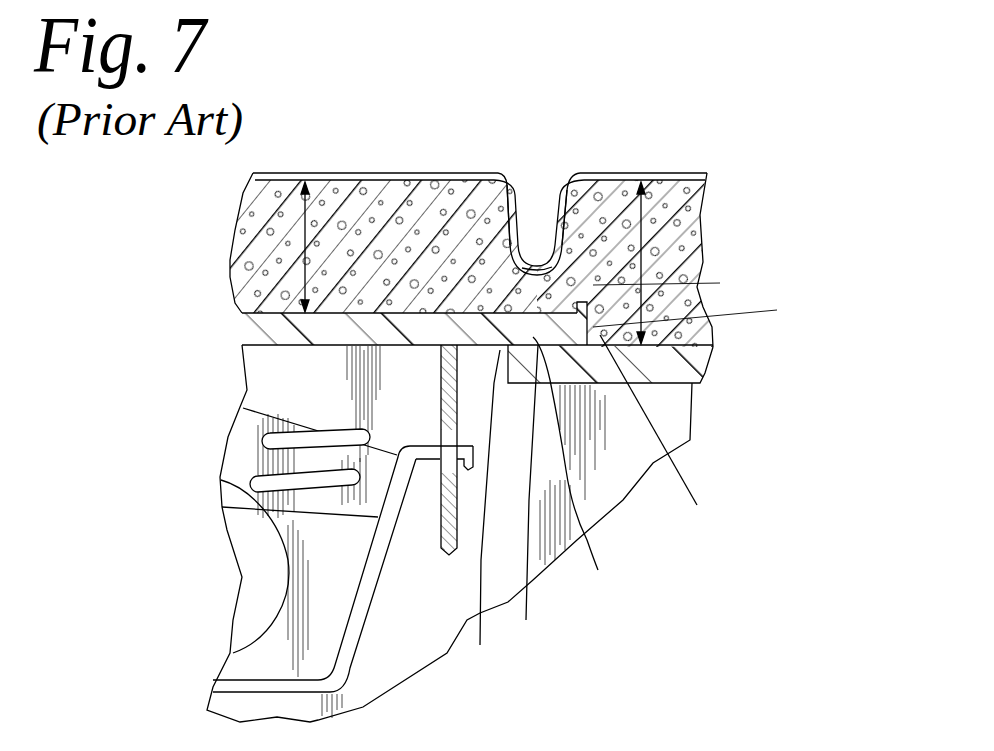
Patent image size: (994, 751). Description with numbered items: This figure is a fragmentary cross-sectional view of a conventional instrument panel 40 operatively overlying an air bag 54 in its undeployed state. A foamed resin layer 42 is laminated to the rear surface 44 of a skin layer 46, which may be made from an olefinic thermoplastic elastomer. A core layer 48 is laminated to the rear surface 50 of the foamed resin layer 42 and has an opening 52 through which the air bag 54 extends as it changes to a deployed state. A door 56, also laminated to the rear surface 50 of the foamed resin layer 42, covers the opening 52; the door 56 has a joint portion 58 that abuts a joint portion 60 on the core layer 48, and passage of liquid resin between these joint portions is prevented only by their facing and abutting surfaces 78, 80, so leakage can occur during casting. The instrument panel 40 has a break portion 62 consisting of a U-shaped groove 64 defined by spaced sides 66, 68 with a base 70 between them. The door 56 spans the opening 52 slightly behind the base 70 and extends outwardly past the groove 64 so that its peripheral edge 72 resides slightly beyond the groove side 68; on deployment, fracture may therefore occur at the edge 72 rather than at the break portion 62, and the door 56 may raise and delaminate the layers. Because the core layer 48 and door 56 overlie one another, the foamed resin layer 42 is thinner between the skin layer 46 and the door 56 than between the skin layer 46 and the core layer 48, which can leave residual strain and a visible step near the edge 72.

The instrument panel 40 is at (823, 242).
The foamed resin layer 42 is at (232, 293).
The rear surface of skin layer 44 is at (395, 177).
The skin layer 46 is at (633, 173).
The core layer 48 is at (697, 505).
The rear surface of foamed resin layer 50 is at (700, 365).
The opening 52 is at (480, 645).
The air bag 54 is at (237, 487).
The door 56 is at (397, 350).
The joint portion of door 58 is at (493, 350).
The joint portion of core layer 60 is at (598, 570).
The break portion 62 is at (533, 174).
The groove 64 is at (527, 212).
The groove side 66 is at (538, 232).
The groove side 68 is at (562, 202).
The base 70 is at (720, 283).
The peripheral edge 72 is at (777, 310).
The abutting surface 78 is at (526, 620).
The abutting surface 80 is at (560, 347).